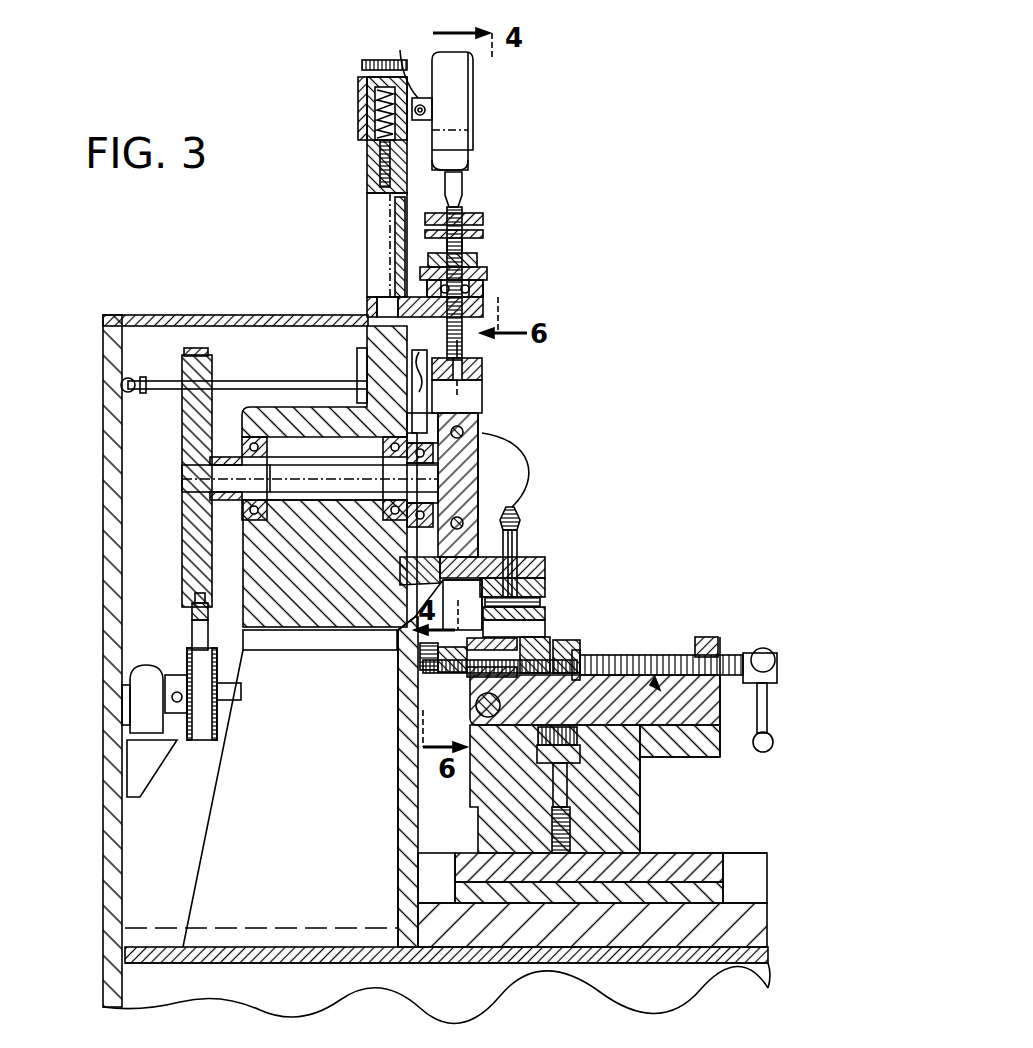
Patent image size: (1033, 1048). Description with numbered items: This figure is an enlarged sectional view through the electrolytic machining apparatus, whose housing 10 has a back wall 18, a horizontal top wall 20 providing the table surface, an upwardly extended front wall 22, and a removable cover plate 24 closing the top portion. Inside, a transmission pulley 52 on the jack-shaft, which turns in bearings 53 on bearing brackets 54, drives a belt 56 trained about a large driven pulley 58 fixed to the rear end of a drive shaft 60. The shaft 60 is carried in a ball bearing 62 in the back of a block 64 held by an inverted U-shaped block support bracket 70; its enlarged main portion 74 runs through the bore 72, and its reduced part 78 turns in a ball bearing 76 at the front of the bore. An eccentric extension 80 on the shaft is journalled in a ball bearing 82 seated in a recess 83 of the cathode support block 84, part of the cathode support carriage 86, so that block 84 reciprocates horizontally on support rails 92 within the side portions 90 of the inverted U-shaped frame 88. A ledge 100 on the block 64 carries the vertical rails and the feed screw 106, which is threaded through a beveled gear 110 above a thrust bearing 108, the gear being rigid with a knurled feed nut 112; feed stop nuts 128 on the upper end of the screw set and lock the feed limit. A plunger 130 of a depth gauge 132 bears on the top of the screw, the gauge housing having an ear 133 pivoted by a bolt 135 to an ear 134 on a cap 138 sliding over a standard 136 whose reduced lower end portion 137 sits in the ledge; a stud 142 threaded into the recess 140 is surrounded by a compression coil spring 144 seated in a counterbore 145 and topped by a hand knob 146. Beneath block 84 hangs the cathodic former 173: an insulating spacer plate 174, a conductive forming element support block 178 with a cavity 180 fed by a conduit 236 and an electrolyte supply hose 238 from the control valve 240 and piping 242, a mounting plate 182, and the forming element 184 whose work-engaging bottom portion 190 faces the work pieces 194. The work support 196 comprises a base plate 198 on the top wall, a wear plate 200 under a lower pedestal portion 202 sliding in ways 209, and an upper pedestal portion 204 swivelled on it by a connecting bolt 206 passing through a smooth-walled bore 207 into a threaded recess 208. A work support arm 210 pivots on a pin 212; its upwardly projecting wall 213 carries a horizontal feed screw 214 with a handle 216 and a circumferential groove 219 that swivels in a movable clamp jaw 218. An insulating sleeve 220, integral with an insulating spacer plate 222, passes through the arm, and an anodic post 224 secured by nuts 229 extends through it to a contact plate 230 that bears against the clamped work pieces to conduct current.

The housing 10 is at (574, 960).
The back wall 18 is at (122, 876).
The top wall 20 is at (218, 947).
The front wall 22 is at (398, 795).
The cover plate 24 is at (250, 315).
The transmission pulley 52 is at (217, 736).
The bearings 53 is at (144, 666).
The bearing brackets 54 is at (143, 762).
The belt 56 is at (200, 745).
The driven pulley 58 is at (183, 571).
The drive shaft 60 is at (182, 483).
The ball bearing 62 is at (252, 523).
The block 64 is at (262, 407).
The block support bracket 70 is at (222, 838).
The bore 72 is at (306, 502).
The main portion of shaft 74 is at (300, 458).
The ball bearing 76 is at (386, 521).
The reduced part of shaft 78 is at (383, 471).
The eccentric extension 80 is at (432, 478).
The ball bearing 82 is at (480, 505).
The recess 83 is at (432, 566).
The cathode support block 84 is at (478, 438).
The cathode support carriage 86 is at (482, 372).
The frame 88 is at (482, 361).
The side portions of frame 90 is at (482, 413).
The support rails 92 is at (463, 428).
The ledge 100 is at (483, 306).
The feed screw 106 is at (463, 249).
The thrust bearing 108 is at (483, 289).
The beveled gear 110 is at (478, 261).
The feed nut 112 is at (487, 274).
The feed stop nuts 128 is at (476, 214).
The plunger 130 is at (462, 196).
The depth gauge 132 is at (466, 117).
The ear 133 is at (445, 135).
The ear 134 is at (395, 63).
The bolt 135 is at (432, 111).
The standard 136 is at (374, 172).
The reduced lower end portion 137 is at (368, 306).
The cap 138 is at (376, 112).
The threaded recess 140 is at (373, 172).
The stud 142 is at (381, 156).
The compression coil spring 144 is at (378, 88).
The counterbore 145 is at (360, 101).
The hand knob 146 is at (381, 61).
The cathodic former 173 is at (546, 572).
The spacer plate 174 is at (546, 560).
The forming element support block 178 is at (545, 590).
The cavity 180 is at (540, 603).
The mounting plate 182 is at (512, 622).
The forming element 184 is at (545, 615).
The work-engaging bottom portion 190 is at (522, 626).
The work pieces 194 is at (582, 648).
The work support 196 is at (668, 655).
The base plate 198 is at (515, 963).
The wear plate 200 is at (677, 877).
The lower pedestal portion 202 is at (487, 863).
The upper pedestal portion 204 is at (648, 778).
The connecting bolt 206 is at (572, 790).
The smooth-walled bore 207 is at (550, 792).
The threaded recess 208 is at (570, 850).
The ways 209 is at (438, 888).
The work support arm 210 is at (722, 757).
The pin 212 is at (478, 708).
The upwardly projecting wall 213 is at (705, 637).
The feed screw 214 is at (748, 654).
The handle 216 is at (766, 753).
The movable clamp jaw 218 is at (575, 680).
The circumferential groove 219 is at (655, 680).
The insulating sleeve 220 is at (450, 673).
The spacer plate 222 is at (490, 717).
The anodic post 224 is at (437, 683).
The nuts 229 is at (430, 662).
The contact plate 230 is at (527, 680).
The conduit 236 is at (457, 638).
The electrolyte supply hose 238 is at (527, 468).
The control valve 240 is at (412, 372).
The piping 242 is at (228, 383).